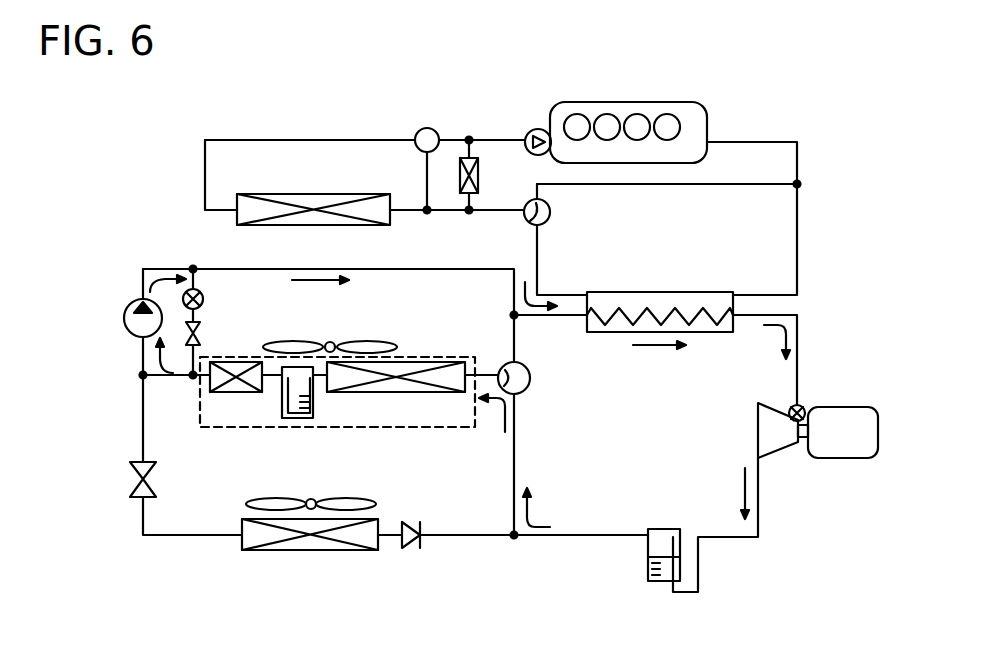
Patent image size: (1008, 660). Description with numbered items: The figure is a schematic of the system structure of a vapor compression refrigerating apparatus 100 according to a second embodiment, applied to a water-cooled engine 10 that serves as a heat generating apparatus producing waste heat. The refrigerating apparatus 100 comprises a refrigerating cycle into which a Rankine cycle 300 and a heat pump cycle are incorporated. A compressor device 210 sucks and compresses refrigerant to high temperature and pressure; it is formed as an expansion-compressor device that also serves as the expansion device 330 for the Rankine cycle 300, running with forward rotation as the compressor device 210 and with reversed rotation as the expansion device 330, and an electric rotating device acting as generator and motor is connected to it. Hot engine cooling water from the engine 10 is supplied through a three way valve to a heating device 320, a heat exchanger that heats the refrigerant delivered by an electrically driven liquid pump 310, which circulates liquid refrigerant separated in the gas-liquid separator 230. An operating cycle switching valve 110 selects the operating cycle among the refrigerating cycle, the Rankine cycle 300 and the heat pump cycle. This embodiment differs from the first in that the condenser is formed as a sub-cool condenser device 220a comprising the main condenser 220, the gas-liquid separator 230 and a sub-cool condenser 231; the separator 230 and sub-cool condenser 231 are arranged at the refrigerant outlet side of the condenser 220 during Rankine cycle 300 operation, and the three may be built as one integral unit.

The engine 10 is at (598, 101).
The vapor compression refrigerating apparatus 100 is at (145, 256).
The operating cycle switching valve 110 is at (531, 380).
The compressor device 210 is at (758, 437).
The condenser 220 is at (388, 393).
The sub-cool condenser device 220a is at (432, 428).
The gas-liquid separator 230 is at (300, 418).
The sub-cool condenser 231 is at (232, 394).
The Rankine cycle 300 is at (430, 269).
The liquid pump 310 is at (124, 318).
The heating device 320 is at (617, 333).
The expansion device 330 is at (736, 434).